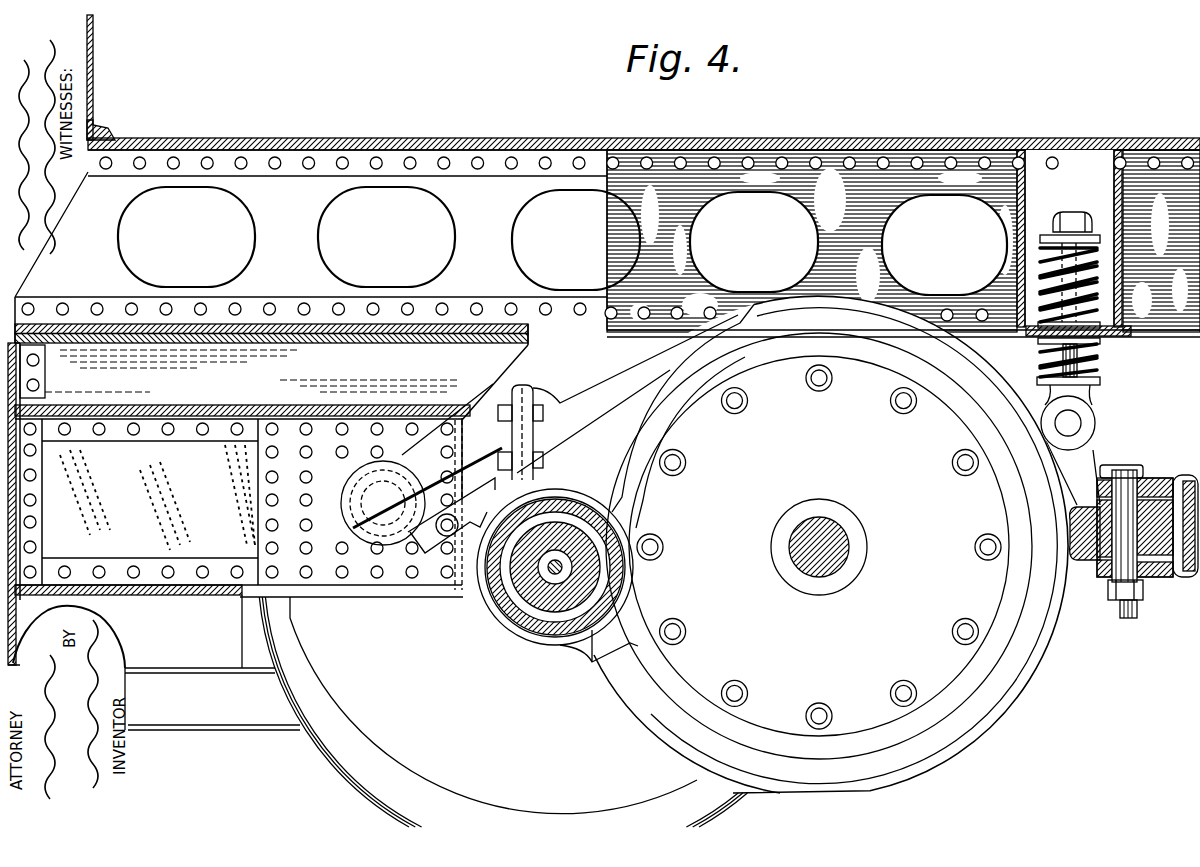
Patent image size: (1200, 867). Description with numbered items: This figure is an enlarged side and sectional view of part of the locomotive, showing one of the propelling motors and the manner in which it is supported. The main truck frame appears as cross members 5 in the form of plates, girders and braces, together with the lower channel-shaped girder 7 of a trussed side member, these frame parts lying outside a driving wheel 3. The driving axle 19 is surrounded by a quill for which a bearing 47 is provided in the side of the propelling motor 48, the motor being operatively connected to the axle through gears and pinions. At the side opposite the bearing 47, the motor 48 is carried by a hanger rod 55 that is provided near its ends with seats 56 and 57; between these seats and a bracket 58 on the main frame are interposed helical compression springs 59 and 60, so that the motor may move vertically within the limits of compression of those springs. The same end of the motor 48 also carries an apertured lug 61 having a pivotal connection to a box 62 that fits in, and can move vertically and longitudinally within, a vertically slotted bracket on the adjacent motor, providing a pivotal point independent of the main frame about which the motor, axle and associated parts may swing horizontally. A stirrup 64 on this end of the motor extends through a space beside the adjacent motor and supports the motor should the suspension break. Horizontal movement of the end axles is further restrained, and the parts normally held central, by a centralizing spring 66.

The driving wheel 3 is at (325, 757).
The cross member 5 is at (216, 410).
The lower channel-shaped girder 7 is at (212, 699).
The axle 19 is at (558, 610).
The bearing 47 is at (578, 500).
The propelling motor 48 is at (884, 546).
The hanger rod 55 is at (1100, 370).
The seat 56 is at (1043, 233).
The seat 57 is at (1088, 385).
The bracket 58 is at (1100, 337).
The helical compression spring 59 is at (1075, 292).
The helical compression spring 60 is at (1098, 354).
The apertured lug 61 is at (1152, 478).
The box 62 is at (1150, 582).
The stirrup 64 is at (1188, 578).
The centralizing spring 66 is at (352, 488).